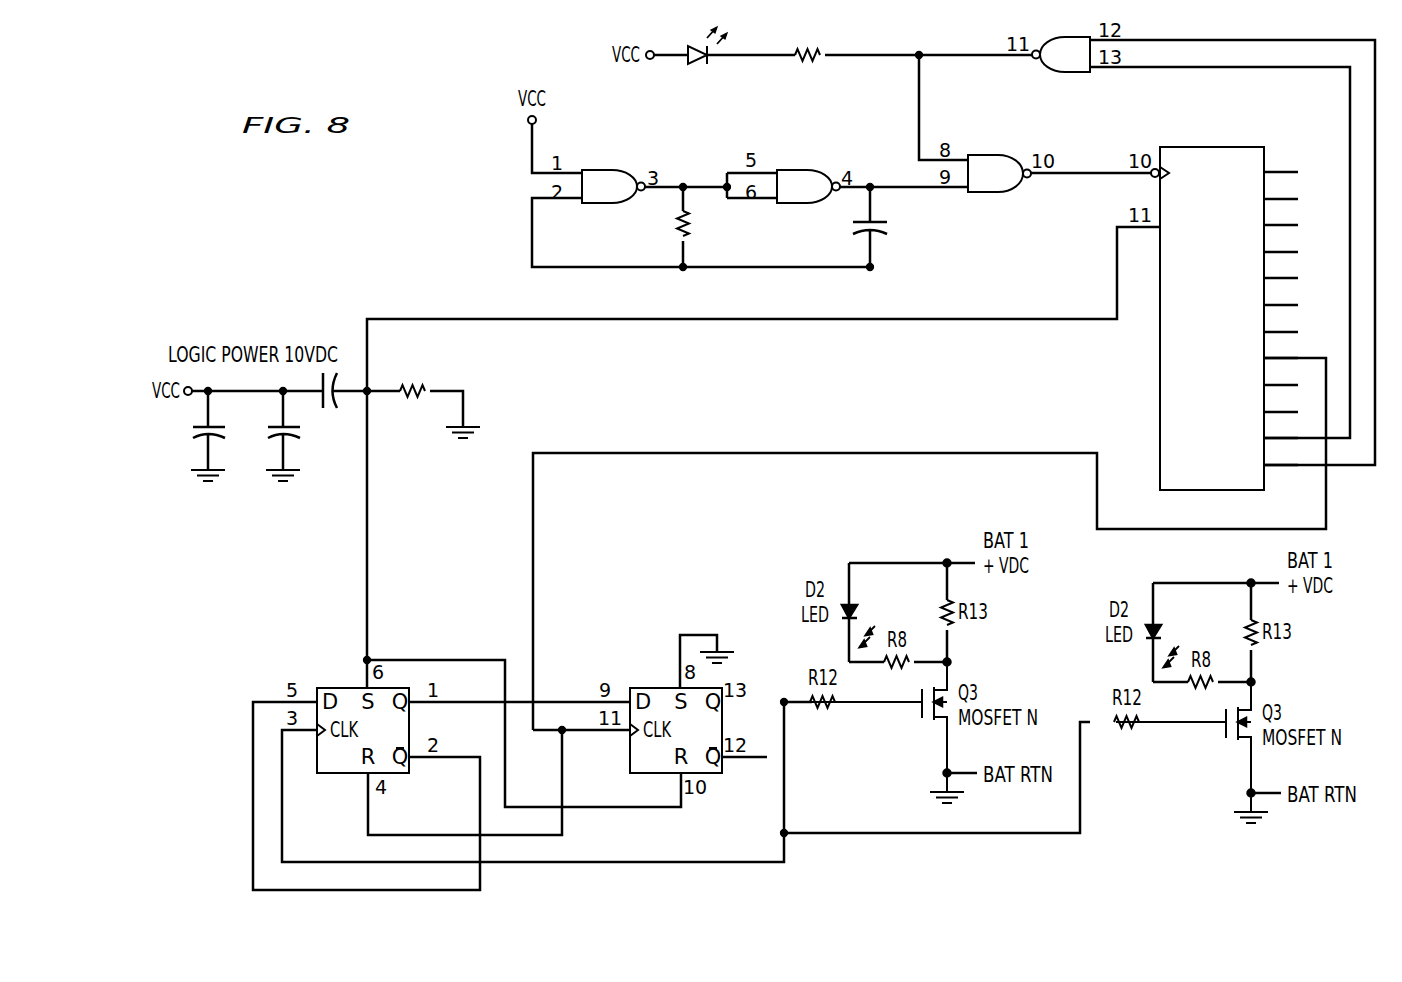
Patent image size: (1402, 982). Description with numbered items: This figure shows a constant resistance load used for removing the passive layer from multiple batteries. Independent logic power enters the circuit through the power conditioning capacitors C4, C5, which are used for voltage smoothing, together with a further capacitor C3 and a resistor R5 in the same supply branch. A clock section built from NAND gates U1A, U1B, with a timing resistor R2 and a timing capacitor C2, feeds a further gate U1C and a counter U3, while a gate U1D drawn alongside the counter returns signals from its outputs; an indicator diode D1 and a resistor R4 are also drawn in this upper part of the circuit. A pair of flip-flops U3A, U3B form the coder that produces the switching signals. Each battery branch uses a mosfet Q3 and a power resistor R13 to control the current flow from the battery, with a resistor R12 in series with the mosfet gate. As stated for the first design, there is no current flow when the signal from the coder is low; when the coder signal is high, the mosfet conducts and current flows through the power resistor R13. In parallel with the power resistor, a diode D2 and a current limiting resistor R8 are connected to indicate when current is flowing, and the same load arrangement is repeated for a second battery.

The LED indicator diode D1 is at (704, 39).
The resistor R4 is at (807, 71).
The NAND gate 4011 U1A is at (613, 187).
The NAND gate 4011 U1B is at (808, 187).
The NAND gate 4011 U1C is at (999, 174).
The NAND gate 4011 U1D is at (1061, 55).
The resistor R2 is at (699, 227).
The capacitor C2 is at (883, 227).
The 4020 binary counter U3 is at (1230, 319).
The capacitor C3 is at (330, 404).
The power conditioning capacitor C4 is at (271, 436).
The power conditioning capacitor C5 is at (196, 436).
The resistor R5 is at (440, 395).
The 4013 flip-flop U3A is at (396, 723).
The 4013 flip-flop U3B is at (700, 723).
The diode D2 is at (1079, 676).
The current limiting resistor R8 is at (1079, 676).
The power resistor R13 is at (1079, 676).
The gate resistor R12 is at (1079, 676).
The mosfet Q3 is at (1079, 676).